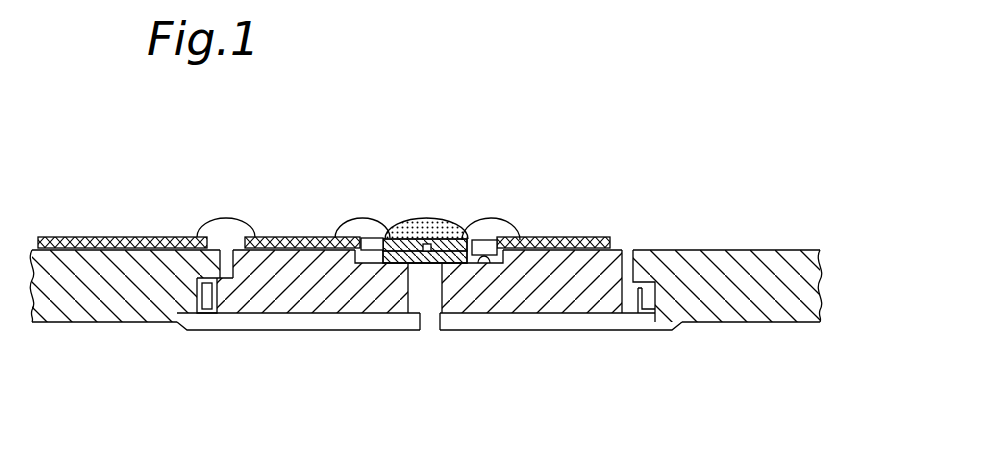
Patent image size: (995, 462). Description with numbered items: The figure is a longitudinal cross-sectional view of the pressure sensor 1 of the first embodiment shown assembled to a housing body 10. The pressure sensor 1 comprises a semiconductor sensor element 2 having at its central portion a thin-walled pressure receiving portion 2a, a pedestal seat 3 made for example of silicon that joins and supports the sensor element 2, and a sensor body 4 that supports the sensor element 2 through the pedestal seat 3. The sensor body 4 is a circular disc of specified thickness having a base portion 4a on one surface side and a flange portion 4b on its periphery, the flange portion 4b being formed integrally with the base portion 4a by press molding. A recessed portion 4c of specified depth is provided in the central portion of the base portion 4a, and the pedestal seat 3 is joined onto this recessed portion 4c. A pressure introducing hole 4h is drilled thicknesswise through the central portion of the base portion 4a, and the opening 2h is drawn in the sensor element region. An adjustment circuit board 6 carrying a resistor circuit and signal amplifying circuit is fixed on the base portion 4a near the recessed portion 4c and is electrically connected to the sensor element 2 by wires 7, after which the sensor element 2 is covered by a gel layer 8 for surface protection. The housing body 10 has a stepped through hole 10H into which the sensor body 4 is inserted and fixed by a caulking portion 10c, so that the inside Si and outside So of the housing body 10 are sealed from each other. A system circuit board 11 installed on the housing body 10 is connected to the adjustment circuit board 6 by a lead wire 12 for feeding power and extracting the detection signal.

The pressure sensor 1 is at (553, 230).
The semiconductor sensor element 2 is at (408, 221).
The pressure receiving portion 2a is at (429, 219).
The hole in chip 2h is at (427, 251).
The pedestal seat 3 is at (380, 263).
The sensor body 4 is at (300, 316).
The base portion 4a is at (627, 292).
The flange portion 4b is at (652, 305).
The recessed portion 4c is at (481, 263).
The pressure introducing hole 4h is at (438, 330).
The adjustment circuit board 6 is at (305, 237).
The wires 7 is at (362, 222).
The gel layer 8 is at (465, 221).
The housing body 10 is at (90, 322).
The caulking portion 10c is at (212, 313).
The through hole 10H is at (628, 300).
The system circuit board 11 is at (74, 237).
The lead wire 12 is at (226, 219).
The outside So is at (131, 217).
The inside Si is at (132, 363).